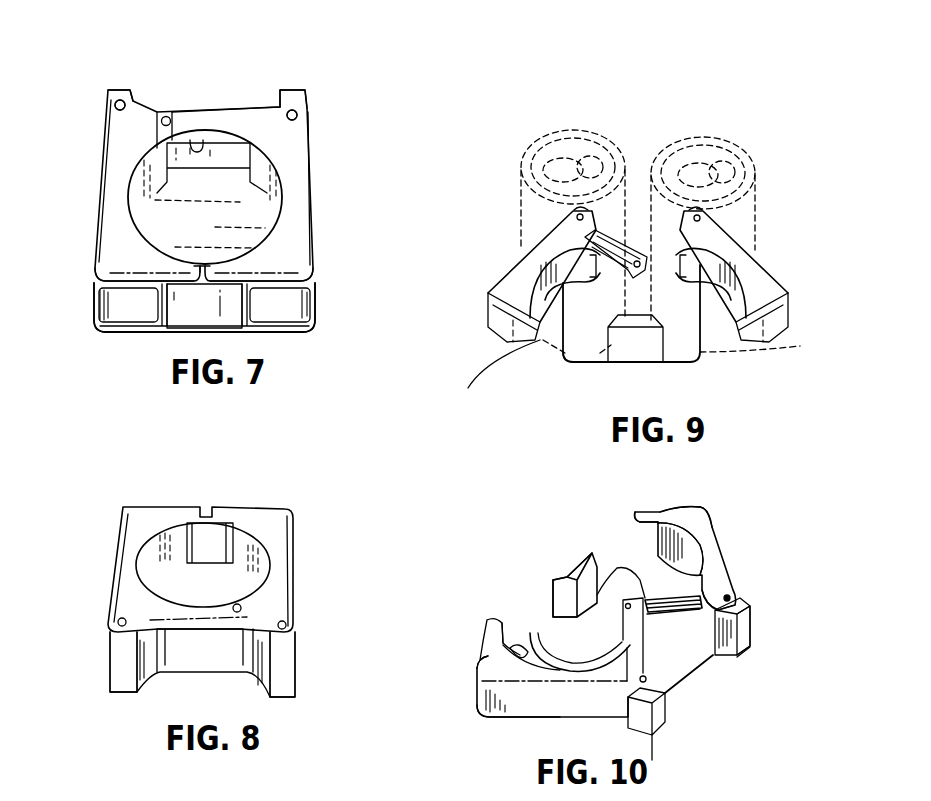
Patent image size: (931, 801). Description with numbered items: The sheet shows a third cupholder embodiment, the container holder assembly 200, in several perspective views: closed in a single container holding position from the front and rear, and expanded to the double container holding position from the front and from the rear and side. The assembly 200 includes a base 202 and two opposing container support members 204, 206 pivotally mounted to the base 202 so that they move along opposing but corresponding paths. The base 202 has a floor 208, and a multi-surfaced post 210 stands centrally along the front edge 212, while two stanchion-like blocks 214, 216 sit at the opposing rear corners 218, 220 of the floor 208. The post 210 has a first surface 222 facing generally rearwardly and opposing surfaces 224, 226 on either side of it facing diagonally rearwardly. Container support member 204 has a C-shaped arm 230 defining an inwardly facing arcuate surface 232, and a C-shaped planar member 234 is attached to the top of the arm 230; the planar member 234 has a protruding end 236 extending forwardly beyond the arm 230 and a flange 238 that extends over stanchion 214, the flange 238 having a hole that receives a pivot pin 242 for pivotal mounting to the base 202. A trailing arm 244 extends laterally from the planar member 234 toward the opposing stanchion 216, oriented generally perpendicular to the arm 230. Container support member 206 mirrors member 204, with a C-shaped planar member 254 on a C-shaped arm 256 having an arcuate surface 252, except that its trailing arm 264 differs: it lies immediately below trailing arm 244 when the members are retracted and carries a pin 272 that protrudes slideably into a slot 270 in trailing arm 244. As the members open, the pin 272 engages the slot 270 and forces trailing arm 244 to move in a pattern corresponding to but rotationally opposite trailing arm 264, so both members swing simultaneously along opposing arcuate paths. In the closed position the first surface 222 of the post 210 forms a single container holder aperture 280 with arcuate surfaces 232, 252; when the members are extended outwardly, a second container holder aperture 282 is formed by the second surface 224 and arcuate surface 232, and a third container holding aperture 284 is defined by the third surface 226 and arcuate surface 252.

In FIG. 7, the container holder assembly 200 is at (334, 70).
In FIG. 9, the container holder assembly 200 is at (776, 153).
In FIG. 8, the container holder assembly 200 is at (239, 478).
In FIG. 10, the container holder assembly 200 is at (752, 504).
In FIG. 9, the base 202 is at (597, 369).
In FIG. 9, the container support member 204 is at (490, 338).
In FIG. 10, the container support member 204 is at (737, 571).
In FIG. 9, the container support member 206 is at (790, 353).
In FIG. 10, the container support member 206 is at (528, 719).
In FIG. 7, the floor 208 is at (181, 334).
In FIG. 9, the floor 208 is at (660, 318).
In FIG. 10, the floor 208 is at (690, 665).
In FIG. 7, the multi-surfaced post 210 is at (212, 322).
In FIG. 9, the multi-surfaced post 210 is at (616, 352).
In FIG. 10, the multi-surfaced post 210 is at (571, 560).
In FIG. 9, the front edge 212 is at (571, 363).
In FIG. 7, the stanchion-like block 214 is at (112, 89).
In FIG. 8, the stanchion-like block 214 is at (281, 683).
In FIG. 10, the stanchion-like block 214 is at (743, 630).
In FIG. 7, the stanchion-like block 216 is at (291, 89).
In FIG. 8, the stanchion-like block 216 is at (108, 667).
In FIG. 10, the stanchion-like block 216 is at (665, 713).
In FIG. 10, the rear corner 218 is at (751, 650).
In FIG. 10, the rear corner 220 is at (652, 735).
In FIG. 10, the first surface 222 is at (580, 580).
In FIG. 7, the second surface 224 is at (110, 97).
In FIG. 10, the second surface 224 is at (560, 604).
In FIG. 10, the third surface 226 is at (588, 578).
In FIG. 10, the C-shaped arm 230 is at (711, 512).
In FIG. 7, the arcuate surface 232 is at (97, 297).
In FIG. 10, the arcuate surface 232 is at (694, 554).
In FIG. 7, the C-shaped planar member 234 is at (106, 262).
In FIG. 10, the C-shaped planar member 234 is at (683, 518).
In FIG. 7, the protruding end 236 is at (166, 272).
In FIG. 10, the protruding end 236 is at (595, 531).
In FIG. 10, the flange 238 is at (722, 591).
In FIG. 10, the pivot pin 242 is at (731, 599).
In FIG. 7, the trailing arm 244 is at (197, 140).
In FIG. 10, the trailing arm 244 is at (658, 592).
In FIG. 10, the arcuate surface 252 is at (502, 652).
In FIG. 7, the C-shaped planar member 254 is at (310, 296).
In FIG. 10, the C-shaped planar member 254 is at (510, 714).
In FIG. 7, the C-shaped arm 256 is at (330, 265).
In FIG. 10, the C-shaped arm 256 is at (487, 668).
In FIG. 7, the trailing arm 264 is at (228, 120).
In FIG. 10, the trailing arm 264 is at (630, 636).
In FIG. 10, the slot 270 is at (672, 612).
In FIG. 7, the pin 272 is at (164, 111).
In FIG. 10, the pin 272 is at (626, 603).
In FIG. 7, the single container holder aperture 280 is at (245, 218).
In FIG. 8, the single container holder aperture 280 is at (177, 577).
In FIG. 9, the second container holder aperture 282 is at (736, 357).
In FIG. 9, the third container holding aperture 284 is at (540, 340).